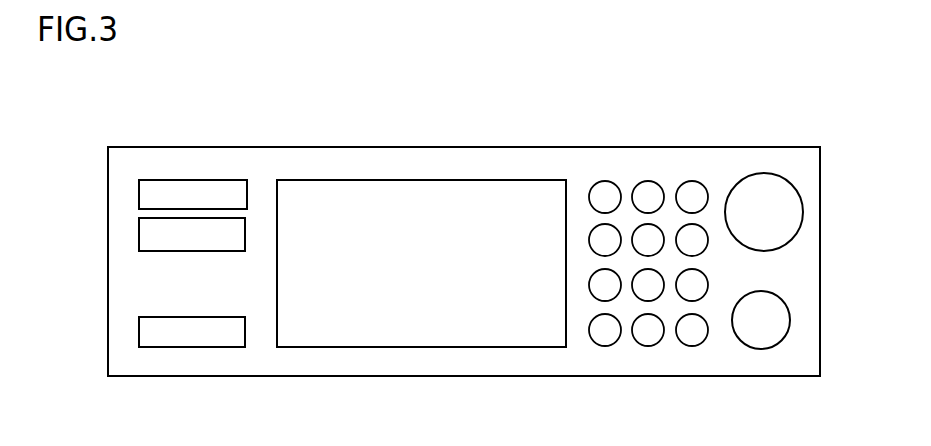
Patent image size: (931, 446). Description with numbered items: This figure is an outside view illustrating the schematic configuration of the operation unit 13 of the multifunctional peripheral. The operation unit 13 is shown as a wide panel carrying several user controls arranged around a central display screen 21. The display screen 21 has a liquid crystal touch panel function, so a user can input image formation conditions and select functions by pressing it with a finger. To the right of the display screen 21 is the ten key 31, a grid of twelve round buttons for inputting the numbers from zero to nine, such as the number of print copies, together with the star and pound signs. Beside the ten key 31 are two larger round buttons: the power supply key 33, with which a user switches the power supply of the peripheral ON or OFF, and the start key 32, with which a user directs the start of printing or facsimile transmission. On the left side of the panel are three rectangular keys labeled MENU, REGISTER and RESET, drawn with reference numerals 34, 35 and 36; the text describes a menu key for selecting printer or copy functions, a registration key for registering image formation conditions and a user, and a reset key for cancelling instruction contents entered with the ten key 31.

The operation unit 13 is at (772, 147).
The display screen 21 is at (524, 180).
The ten key 31 is at (654, 167).
The start key 32 is at (790, 320).
The power supply key 33 is at (803, 200).
The menu button 34 is at (139, 196).
The register button 35 is at (139, 236).
The reset button 36 is at (139, 340).